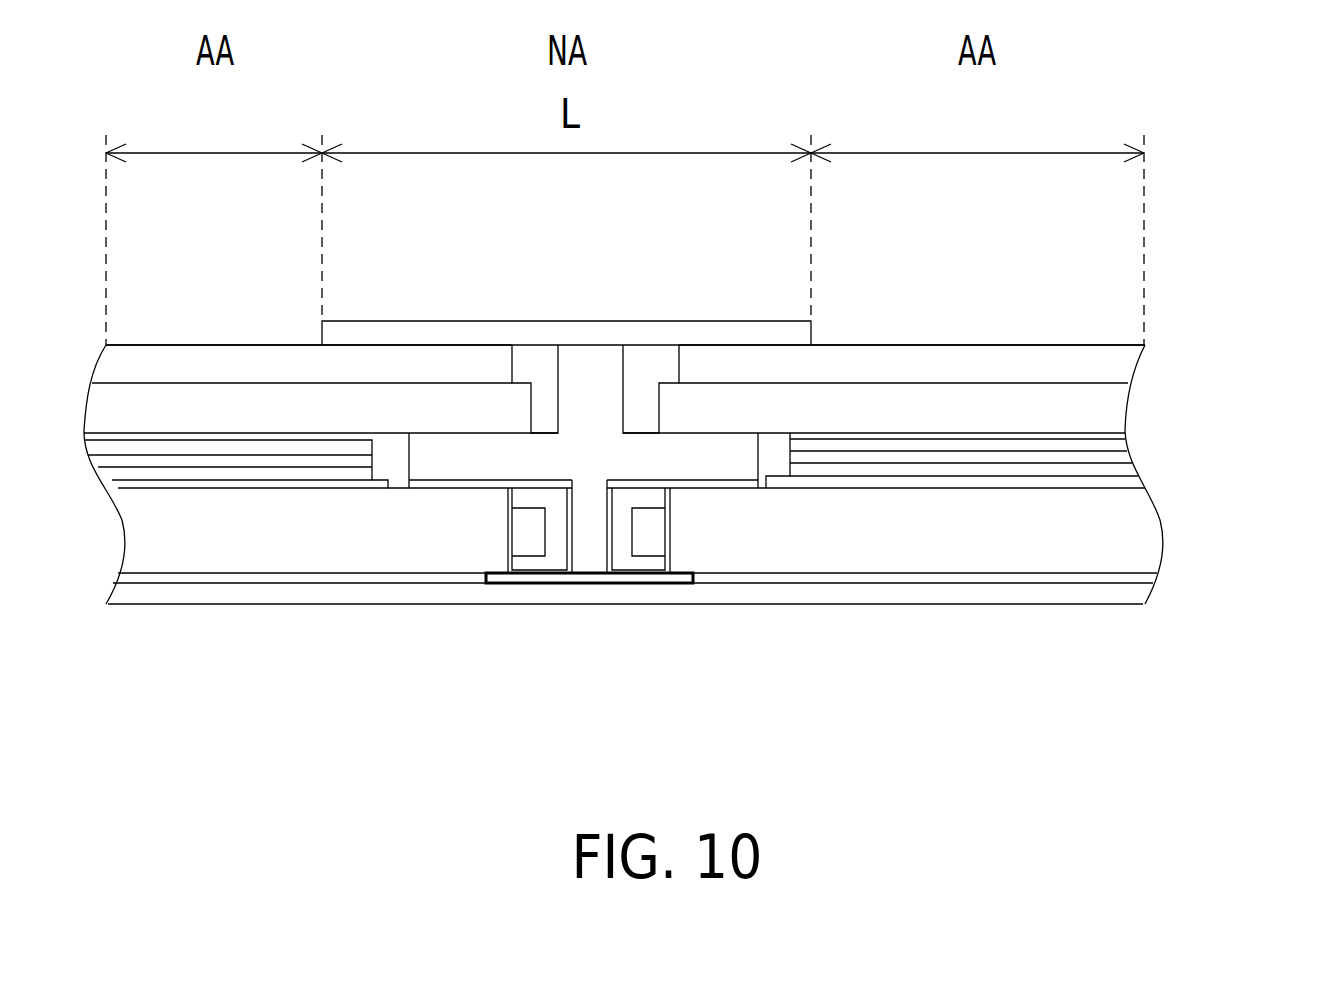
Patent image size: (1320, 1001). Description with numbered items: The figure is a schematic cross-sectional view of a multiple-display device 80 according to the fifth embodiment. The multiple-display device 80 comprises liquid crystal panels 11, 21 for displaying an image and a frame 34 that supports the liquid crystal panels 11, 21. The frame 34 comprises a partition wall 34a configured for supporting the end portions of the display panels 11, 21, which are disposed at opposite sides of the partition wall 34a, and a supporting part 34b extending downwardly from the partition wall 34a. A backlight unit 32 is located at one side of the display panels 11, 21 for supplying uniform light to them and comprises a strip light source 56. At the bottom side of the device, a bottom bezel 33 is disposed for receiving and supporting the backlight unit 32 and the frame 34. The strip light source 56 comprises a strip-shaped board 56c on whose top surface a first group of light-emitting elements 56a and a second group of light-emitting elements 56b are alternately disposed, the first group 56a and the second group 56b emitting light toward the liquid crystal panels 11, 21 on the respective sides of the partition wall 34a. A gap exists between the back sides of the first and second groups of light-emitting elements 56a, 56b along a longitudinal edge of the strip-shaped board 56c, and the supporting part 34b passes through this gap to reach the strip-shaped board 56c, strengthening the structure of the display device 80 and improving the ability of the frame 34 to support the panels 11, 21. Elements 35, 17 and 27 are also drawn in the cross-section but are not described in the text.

The multiple-display device 80 is at (1312, 58).
The liquid crystal panel 11 is at (208, 345).
The liquid crystal panel 21 is at (1012, 345).
The light shielding layer 35 is at (420, 332).
The frame 34 is at (762, 245).
The partition wall 34a is at (585, 363).
The supporting part 34b is at (593, 517).
The backlight unit 32 is at (924, 726).
The first device layer 17 is at (342, 553).
The second device layer 27 is at (890, 555).
The strip light source 56 is at (457, 668).
The first group of light-emitting elements 56a is at (543, 563).
The second group of light-emitting elements 56b is at (645, 563).
The strip-shaped board 56c is at (577, 577).
The bottom bezel 33 is at (977, 592).